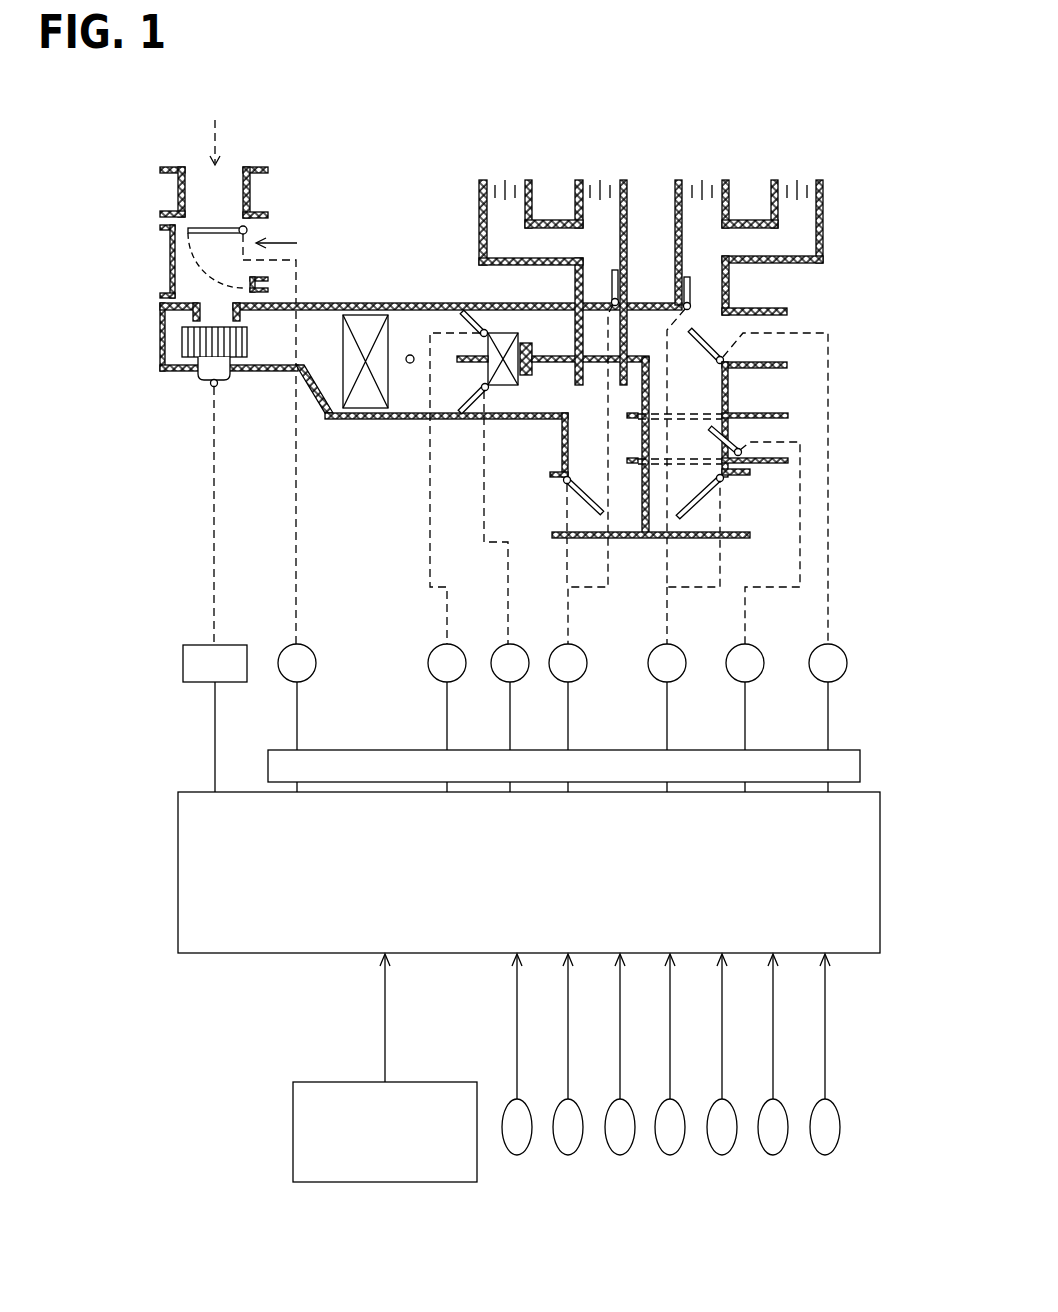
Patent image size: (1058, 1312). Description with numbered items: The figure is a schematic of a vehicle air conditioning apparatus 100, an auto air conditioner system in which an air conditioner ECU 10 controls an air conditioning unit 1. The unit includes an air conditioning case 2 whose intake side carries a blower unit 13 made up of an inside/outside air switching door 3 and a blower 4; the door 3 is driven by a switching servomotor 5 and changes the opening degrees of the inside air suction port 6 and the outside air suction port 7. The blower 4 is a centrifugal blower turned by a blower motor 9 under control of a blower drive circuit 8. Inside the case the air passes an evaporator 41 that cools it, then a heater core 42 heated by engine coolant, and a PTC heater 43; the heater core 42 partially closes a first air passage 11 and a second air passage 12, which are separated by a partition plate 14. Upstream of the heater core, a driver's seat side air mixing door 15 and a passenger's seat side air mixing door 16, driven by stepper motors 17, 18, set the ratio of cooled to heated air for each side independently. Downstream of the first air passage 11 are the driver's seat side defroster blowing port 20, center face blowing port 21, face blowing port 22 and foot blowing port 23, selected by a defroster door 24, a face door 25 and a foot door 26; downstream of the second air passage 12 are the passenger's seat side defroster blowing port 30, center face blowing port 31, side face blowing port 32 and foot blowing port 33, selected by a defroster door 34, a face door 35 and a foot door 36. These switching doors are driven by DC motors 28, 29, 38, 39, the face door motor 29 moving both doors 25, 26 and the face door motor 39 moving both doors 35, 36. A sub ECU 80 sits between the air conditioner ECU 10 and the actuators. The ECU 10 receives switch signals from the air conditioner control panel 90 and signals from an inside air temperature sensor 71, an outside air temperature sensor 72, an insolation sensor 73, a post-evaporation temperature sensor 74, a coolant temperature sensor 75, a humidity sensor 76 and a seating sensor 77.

The air conditioning unit 1 is at (336, 190).
The air conditioning case 2 is at (373, 303).
The inside/outside air switching door 3 is at (218, 229).
The blower 4 is at (197, 339).
The switching servomotor 5 is at (288, 682).
The inside air suction port 6 is at (263, 231).
The outside air suction port 7 is at (207, 183).
The blower drive circuit 8 is at (202, 685).
The blower motor 9 is at (205, 378).
The air conditioner ECU 10 is at (258, 955).
The first air passage 11 is at (562, 325).
The second air passage 12 is at (548, 400).
The blower unit 13 is at (125, 295).
The partition plate 14 is at (552, 354).
The driver's seat side air mixing door 15 is at (436, 300).
The passenger's seat side air mixing door 16 is at (458, 411).
The stepper motor 17 is at (440, 682).
The stepper motor 18 is at (503, 682).
The driver's seat side defroster blowing port 20 is at (782, 327).
The driver's seat side center face blowing port 21 is at (708, 183).
The driver's seat side face blowing port 22 is at (804, 183).
The driver's seat side foot blowing port 23 is at (745, 503).
The driver's seat side defroster door 24 is at (715, 343).
The driver's seat side face door 25 is at (697, 303).
The driver's seat side foot door 26 is at (697, 507).
The DC motor 28 is at (822, 682).
The driver's seat side face door motor 29 is at (660, 682).
The passenger's seat side defroster blowing port 30 is at (781, 430).
The passenger's seat side center face blowing port 31 is at (608, 183).
The passenger's seat-side side face blowing port 32 is at (512, 183).
The passenger's seat side foot blowing port 33 is at (557, 505).
The passenger's seat side defroster door 34 is at (740, 449).
The passenger's seat side face door 35 is at (607, 272).
The passenger's seat side foot door 36 is at (587, 507).
The DC motor 38 is at (738, 682).
The passenger's seat side face door motor 39 is at (562, 682).
The evaporator 41 is at (366, 402).
The heater core 42 is at (497, 388).
The PTC heater 43 is at (492, 296).
The inside air temperature sensor 71 is at (517, 1156).
The outside air temperature sensor 72 is at (568, 1156).
The insolation sensor 73 is at (620, 1156).
The post-evaporation temperature sensor 74 is at (410, 365).
The coolant temperature sensor 75 is at (722, 1156).
The humidity sensor 76 is at (773, 1156).
The seating sensor 77 is at (825, 1156).
The sub ECU 80 is at (862, 768).
The air conditioner control panel 90 is at (386, 1183).
The vehicle air conditioning apparatus 100 is at (148, 602).